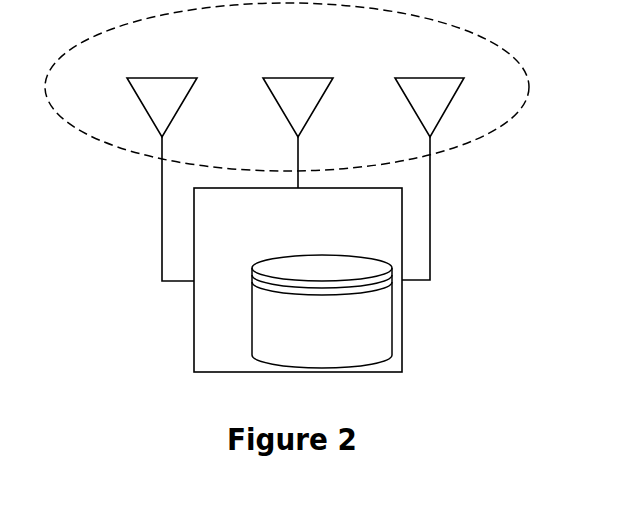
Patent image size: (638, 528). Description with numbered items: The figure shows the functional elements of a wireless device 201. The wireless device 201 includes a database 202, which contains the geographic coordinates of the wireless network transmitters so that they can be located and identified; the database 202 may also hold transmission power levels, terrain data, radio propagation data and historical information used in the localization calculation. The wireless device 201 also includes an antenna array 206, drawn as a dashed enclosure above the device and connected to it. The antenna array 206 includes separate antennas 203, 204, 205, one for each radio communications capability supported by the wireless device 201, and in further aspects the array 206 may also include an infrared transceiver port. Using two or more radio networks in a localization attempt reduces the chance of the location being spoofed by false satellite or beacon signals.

The wireless device 201 is at (298, 280).
The database 202 is at (322, 311).
The antenna 203 is at (162, 156).
The antenna 204 is at (298, 110).
The antenna 205 is at (429, 156).
The antenna array 206 is at (299, 87).